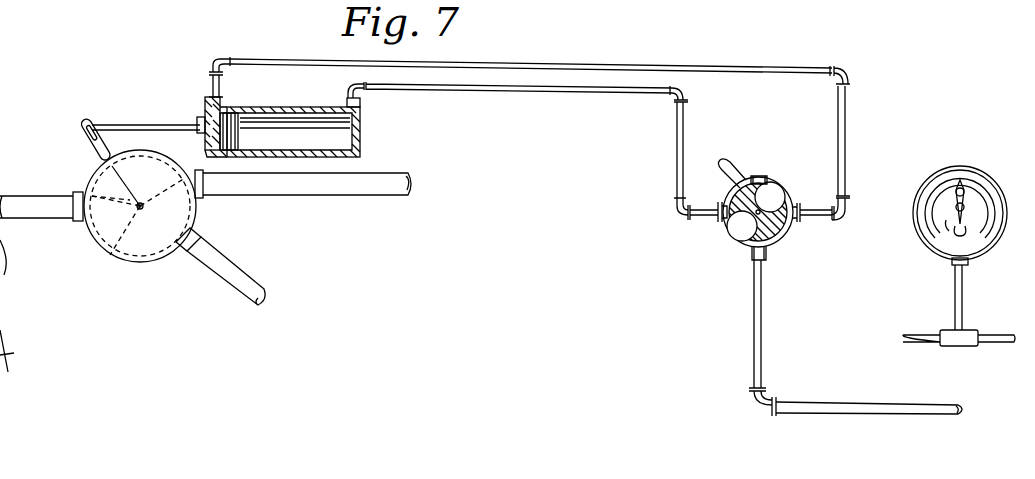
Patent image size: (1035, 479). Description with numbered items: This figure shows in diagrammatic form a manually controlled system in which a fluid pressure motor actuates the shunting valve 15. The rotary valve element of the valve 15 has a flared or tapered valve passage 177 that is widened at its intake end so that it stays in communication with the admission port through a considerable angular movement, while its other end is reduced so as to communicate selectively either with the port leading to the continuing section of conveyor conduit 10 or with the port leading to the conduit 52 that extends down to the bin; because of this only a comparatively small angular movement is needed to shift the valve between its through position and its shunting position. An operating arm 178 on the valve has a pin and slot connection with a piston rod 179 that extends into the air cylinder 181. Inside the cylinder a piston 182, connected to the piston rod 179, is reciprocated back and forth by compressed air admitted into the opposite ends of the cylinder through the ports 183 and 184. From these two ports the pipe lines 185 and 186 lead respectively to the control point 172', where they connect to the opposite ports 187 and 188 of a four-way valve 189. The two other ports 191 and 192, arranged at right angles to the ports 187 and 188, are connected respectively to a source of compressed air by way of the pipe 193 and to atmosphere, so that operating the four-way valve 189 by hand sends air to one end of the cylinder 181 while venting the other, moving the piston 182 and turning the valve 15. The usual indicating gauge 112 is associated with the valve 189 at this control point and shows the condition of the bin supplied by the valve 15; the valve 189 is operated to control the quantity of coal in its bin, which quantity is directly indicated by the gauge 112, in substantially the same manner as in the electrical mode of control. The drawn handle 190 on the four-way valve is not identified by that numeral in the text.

The pipe 10 is at (276, 196).
The shunting valve 15 is at (126, 270).
The conduit 52 is at (236, 278).
The indicating gauge 112 is at (930, 262).
The control point 172' is at (800, 310).
The valve passage 177 is at (106, 232).
The operating arm 178 is at (100, 152).
The piston rod 179 is at (147, 126).
The air cylinder 181 is at (306, 108).
The piston 182 is at (236, 114).
The port 183 is at (362, 105).
The port 184 is at (207, 103).
The pipe line 185 is at (484, 93).
The pipe line 186 is at (522, 62).
The port 187 is at (723, 218).
The port 188 is at (801, 216).
The four-way valve 189 is at (740, 246).
The valve handle 190 is at (726, 168).
The port 191 is at (766, 256).
The port 192 is at (768, 180).
The pipe 193 is at (752, 348).